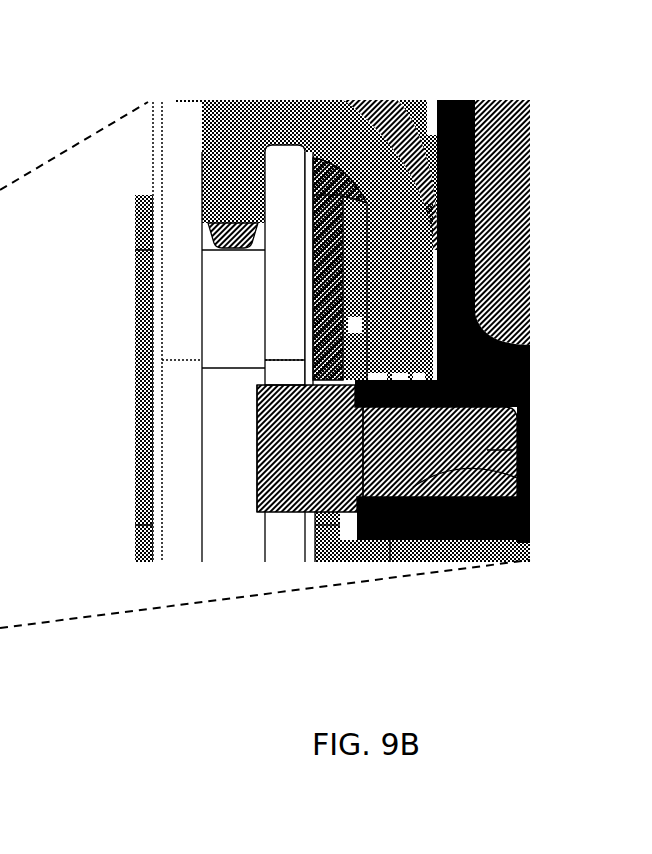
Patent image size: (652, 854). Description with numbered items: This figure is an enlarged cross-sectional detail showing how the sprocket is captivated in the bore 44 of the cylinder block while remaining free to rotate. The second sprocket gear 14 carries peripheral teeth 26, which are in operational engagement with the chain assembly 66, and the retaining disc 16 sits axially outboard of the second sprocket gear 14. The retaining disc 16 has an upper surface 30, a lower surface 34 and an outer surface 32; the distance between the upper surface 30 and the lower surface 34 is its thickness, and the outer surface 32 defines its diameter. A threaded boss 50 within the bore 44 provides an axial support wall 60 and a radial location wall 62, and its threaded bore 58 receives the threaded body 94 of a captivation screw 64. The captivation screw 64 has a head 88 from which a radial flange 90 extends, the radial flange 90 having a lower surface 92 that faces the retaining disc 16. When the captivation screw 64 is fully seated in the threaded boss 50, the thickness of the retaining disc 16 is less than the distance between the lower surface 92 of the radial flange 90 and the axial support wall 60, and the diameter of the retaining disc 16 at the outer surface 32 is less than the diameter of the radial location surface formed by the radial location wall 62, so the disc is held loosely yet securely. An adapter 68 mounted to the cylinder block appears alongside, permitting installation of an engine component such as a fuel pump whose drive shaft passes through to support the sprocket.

The second sprocket gear 14 is at (202, 118).
The teeth 26 is at (217, 203).
The retaining disc 16 is at (378, 272).
The upper surface 30 is at (360, 342).
The chain assembly 66 is at (192, 387).
The lower surface 92 is at (390, 420).
The head 88 is at (257, 503).
The captivation screw 64 is at (295, 510).
The radial flange 90 is at (343, 513).
The threaded boss 50 is at (435, 543).
The threaded bore 58 is at (525, 497).
The threaded body 94 is at (533, 440).
The outer surface 32 is at (530, 362).
The axial support wall 60 is at (500, 345).
The radial location wall 62 is at (462, 330).
The bore 44 is at (465, 290).
The lower surface 34 is at (473, 263).
The adapter 68 is at (510, 188).